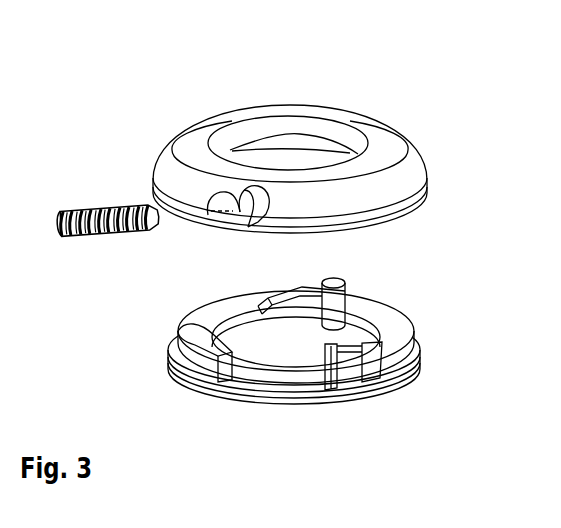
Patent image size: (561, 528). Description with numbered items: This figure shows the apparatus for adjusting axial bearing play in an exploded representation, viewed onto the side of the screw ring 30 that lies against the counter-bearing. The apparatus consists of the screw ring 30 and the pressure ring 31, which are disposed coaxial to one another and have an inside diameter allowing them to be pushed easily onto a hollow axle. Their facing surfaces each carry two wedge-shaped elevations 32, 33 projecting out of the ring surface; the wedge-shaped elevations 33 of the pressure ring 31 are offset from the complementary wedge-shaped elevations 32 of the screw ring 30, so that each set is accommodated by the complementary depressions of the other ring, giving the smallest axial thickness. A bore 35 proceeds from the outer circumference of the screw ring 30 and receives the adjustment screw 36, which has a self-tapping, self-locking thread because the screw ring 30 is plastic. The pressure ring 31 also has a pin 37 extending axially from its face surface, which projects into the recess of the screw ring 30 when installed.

The screw ring 30 is at (192, 140).
The pressure ring 31 is at (418, 328).
The wedge-shaped elevations 32 is at (265, 139).
The wedge-shaped elevations 33 is at (183, 332).
The bore 35 is at (246, 192).
The adjustment screw 36 is at (95, 207).
The pin 37 is at (345, 283).